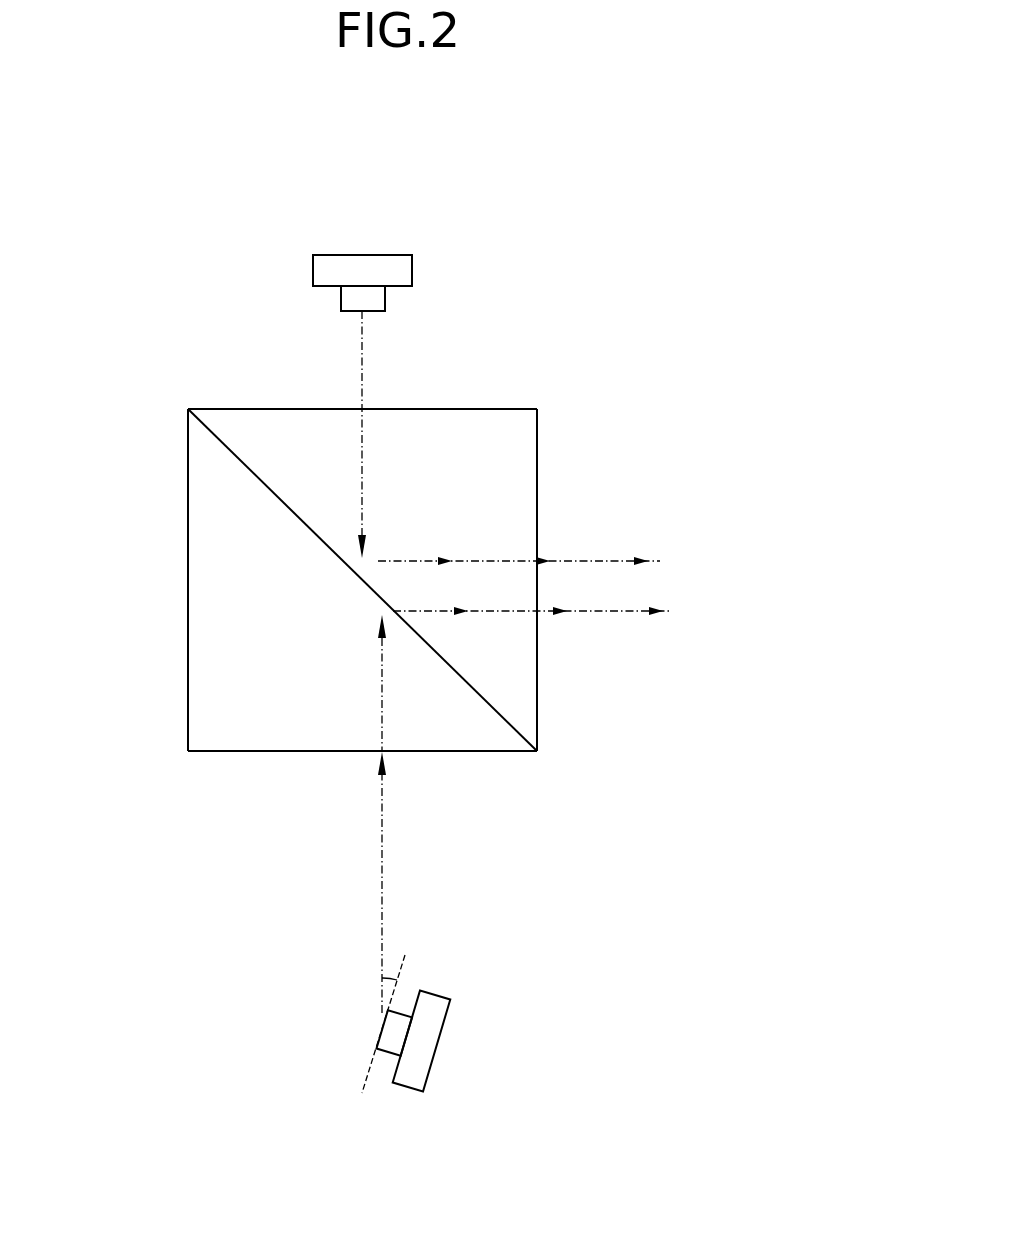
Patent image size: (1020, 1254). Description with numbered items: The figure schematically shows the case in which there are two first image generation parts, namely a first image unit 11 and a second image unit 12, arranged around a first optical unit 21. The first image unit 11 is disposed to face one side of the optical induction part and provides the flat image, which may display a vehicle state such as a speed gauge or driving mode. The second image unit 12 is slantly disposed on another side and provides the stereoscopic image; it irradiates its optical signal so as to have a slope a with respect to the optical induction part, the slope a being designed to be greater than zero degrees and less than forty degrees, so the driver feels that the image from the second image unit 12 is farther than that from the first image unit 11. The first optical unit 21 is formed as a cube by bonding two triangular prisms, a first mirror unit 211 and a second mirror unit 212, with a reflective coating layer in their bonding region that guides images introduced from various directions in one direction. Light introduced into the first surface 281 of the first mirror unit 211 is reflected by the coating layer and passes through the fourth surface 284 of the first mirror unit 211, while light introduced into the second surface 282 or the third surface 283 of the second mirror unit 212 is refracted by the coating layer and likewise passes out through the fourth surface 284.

The first image unit 11 is at (325, 271).
The second image unit 12 is at (433, 1040).
The first optical unit 21 is at (436, 604).
The first mirror unit 211 is at (523, 701).
The second mirror unit 212 is at (473, 738).
The first surface 281 is at (485, 407).
The second surface 282 is at (430, 753).
The third surface 283 is at (188, 525).
The fourth surface 284 is at (538, 444).
The slope a is at (392, 976).